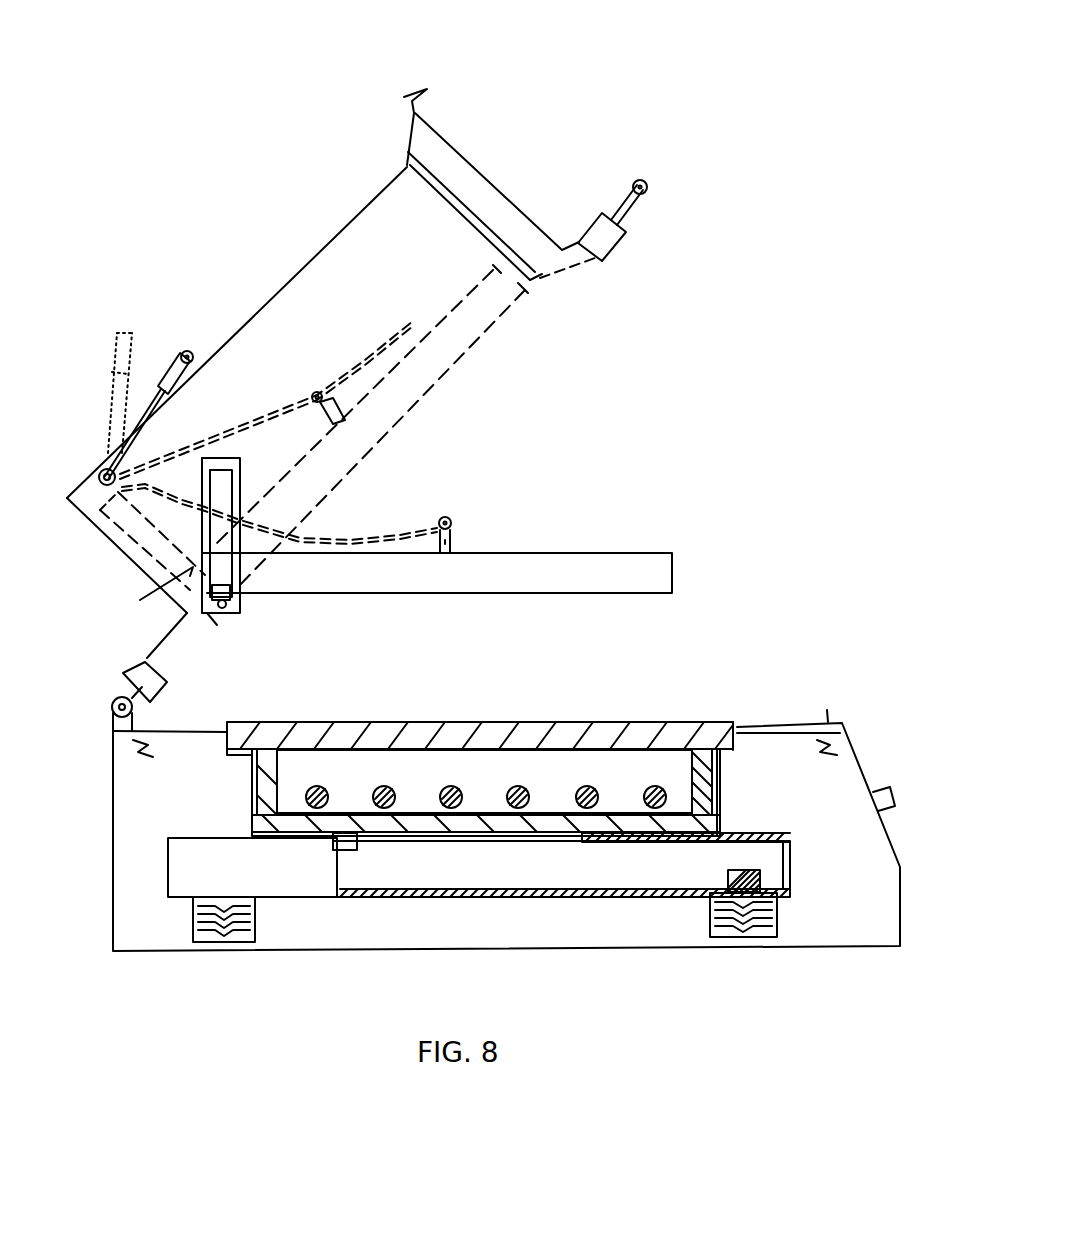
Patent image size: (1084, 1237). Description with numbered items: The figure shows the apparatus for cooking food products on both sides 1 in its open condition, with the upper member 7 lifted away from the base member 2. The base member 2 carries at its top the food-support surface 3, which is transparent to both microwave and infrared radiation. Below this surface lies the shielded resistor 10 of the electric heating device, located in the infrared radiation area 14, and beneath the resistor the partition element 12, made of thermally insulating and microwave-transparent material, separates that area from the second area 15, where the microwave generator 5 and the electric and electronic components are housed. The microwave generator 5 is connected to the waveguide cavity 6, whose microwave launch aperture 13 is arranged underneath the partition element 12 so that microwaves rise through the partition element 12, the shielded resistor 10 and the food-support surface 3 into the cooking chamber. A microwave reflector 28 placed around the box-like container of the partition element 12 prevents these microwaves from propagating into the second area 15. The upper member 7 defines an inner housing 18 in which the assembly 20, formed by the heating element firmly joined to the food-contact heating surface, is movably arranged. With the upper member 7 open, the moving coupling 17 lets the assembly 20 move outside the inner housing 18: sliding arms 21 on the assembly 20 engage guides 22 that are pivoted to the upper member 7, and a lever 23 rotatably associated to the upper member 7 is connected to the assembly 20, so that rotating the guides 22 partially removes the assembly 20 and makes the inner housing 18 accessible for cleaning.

The apparatus for cooking food products on both sides 1 is at (697, 84).
The base member 2 is at (843, 722).
The food-support surface 3 is at (300, 737).
The microwave generator 5 is at (717, 917).
The waveguide cavity 6 is at (625, 858).
The upper member 7 is at (342, 230).
The shielded resistor 10 is at (392, 787).
The partition element 12 is at (263, 767).
The microwave launch aperture 13 is at (383, 840).
The infrared radiation area 14 is at (610, 773).
The second area 15 is at (280, 933).
The moving coupling 17 is at (95, 458).
The inner housing 18 is at (440, 247).
The assembly 20 is at (565, 570).
The sliding arms 21 is at (151, 600).
The guides 22 is at (223, 458).
The lever 23 is at (177, 357).
The microwave reflector 28 is at (252, 803).